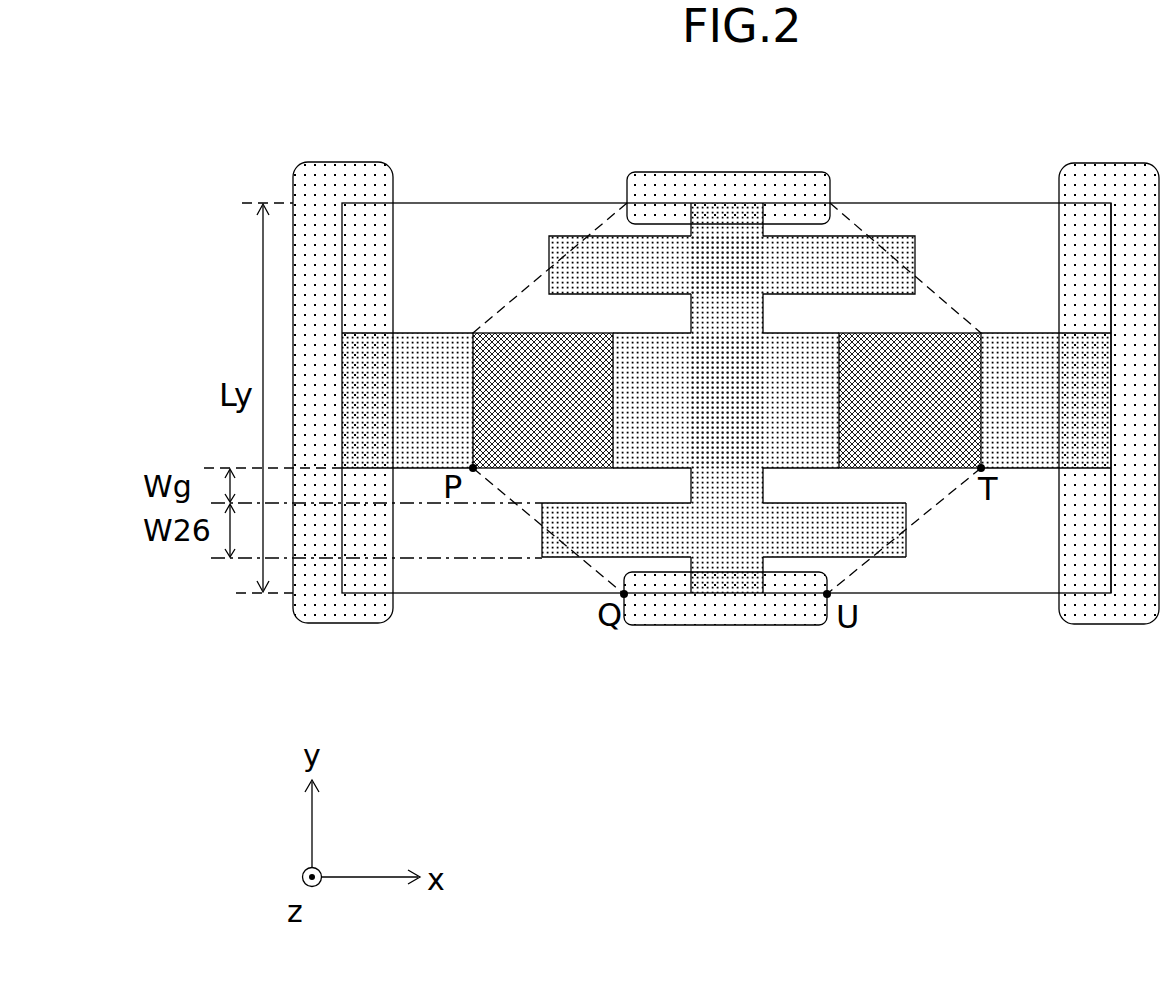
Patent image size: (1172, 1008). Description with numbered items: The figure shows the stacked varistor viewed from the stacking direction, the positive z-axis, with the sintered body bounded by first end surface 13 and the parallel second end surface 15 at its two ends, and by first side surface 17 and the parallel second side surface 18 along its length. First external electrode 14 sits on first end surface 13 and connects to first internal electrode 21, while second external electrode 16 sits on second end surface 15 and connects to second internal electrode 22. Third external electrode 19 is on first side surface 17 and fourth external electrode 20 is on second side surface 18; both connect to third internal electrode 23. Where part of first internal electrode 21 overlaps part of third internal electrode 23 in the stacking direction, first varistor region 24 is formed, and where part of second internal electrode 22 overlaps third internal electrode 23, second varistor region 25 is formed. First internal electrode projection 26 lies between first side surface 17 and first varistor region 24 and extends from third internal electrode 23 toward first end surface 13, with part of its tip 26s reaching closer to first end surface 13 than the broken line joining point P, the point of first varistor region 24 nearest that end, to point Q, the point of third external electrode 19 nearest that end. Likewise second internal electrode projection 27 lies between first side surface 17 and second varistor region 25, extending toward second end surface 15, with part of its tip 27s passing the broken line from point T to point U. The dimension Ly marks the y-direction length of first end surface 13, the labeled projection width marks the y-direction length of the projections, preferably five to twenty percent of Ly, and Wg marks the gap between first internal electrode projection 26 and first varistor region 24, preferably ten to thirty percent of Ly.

The first end surface 13 is at (726, 408).
The first external electrode 14 is at (347, 617).
The second end surface 15 is at (1111, 277).
The second external electrode 16 is at (1111, 617).
The first side surface 17 is at (585, 595).
The second side surface 18 is at (549, 203).
The third external electrode 19 is at (807, 615).
The fourth external electrode 20 is at (730, 172).
The first internal electrode 21 is at (437, 442).
The second internal electrode 22 is at (1030, 445).
The third internal electrode 23 is at (722, 502).
The first varistor region 24 is at (537, 423).
The second varistor region 25 is at (922, 425).
The first internal electrode projection 26 is at (584, 620).
The tip 26s is at (542, 539).
The second internal electrode projection 27 is at (871, 620).
The tip 27s is at (908, 553).